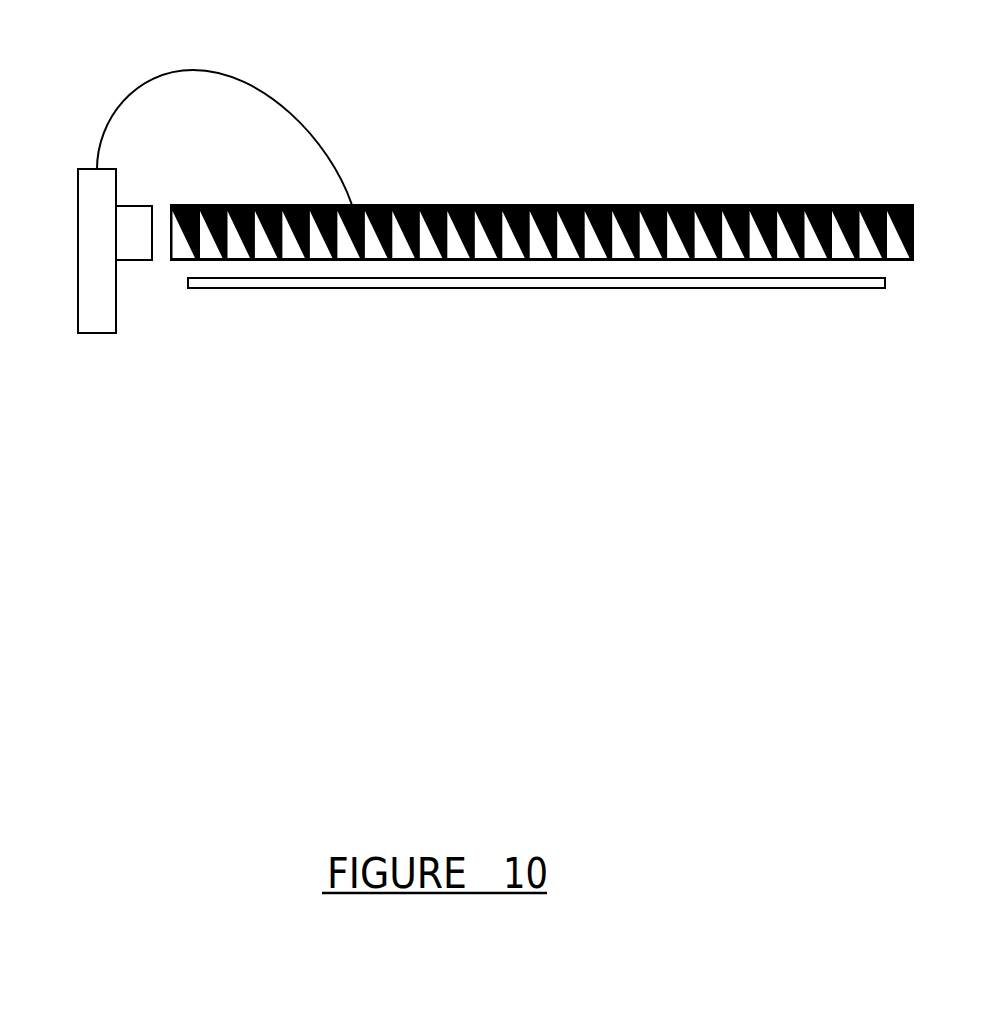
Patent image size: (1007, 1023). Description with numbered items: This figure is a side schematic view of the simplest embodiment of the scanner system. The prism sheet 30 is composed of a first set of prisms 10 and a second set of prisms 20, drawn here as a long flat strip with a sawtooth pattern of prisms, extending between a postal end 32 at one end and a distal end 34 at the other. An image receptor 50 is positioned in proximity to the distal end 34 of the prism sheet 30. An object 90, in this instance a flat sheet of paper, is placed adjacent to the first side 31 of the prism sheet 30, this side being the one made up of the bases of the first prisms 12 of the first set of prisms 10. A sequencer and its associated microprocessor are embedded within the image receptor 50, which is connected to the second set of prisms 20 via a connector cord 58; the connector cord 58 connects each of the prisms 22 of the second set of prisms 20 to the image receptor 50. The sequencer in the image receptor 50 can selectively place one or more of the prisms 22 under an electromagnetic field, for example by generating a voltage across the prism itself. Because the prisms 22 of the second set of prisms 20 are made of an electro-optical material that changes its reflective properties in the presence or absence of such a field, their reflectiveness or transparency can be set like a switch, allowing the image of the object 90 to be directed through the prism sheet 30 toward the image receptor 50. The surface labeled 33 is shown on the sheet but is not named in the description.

The first set of prisms 10 is at (753, 260).
The first prisms 12 is at (625, 260).
The second set of prisms 20 is at (733, 205).
The prisms of the second set 22 is at (624, 205).
The prism sheet 30 is at (816, 205).
The first side 31 is at (453, 260).
The postal end 32 is at (912, 262).
The top surface 33 is at (442, 205).
The distal end 34 is at (165, 206).
The image receptor 50 is at (97, 333).
The connector cord 58 is at (216, 70).
The object 90 is at (300, 288).